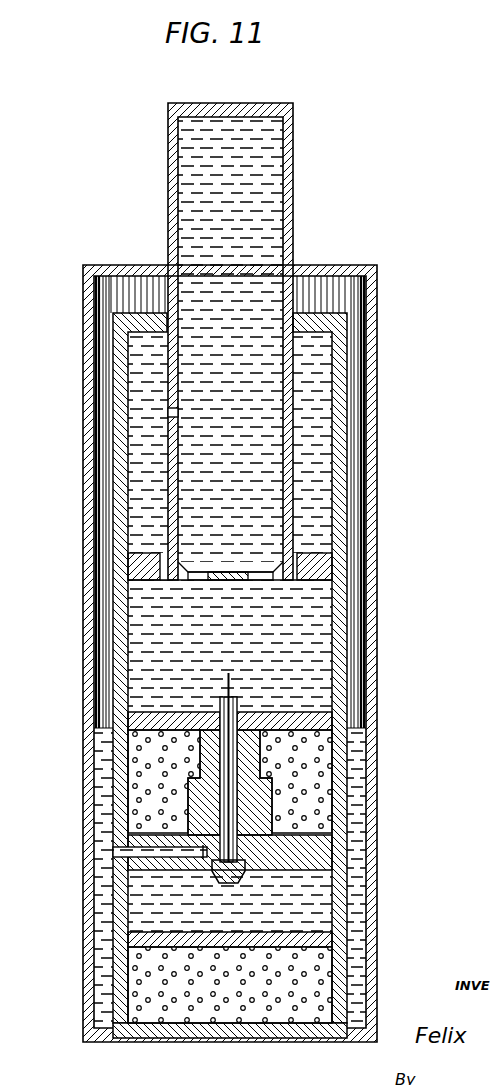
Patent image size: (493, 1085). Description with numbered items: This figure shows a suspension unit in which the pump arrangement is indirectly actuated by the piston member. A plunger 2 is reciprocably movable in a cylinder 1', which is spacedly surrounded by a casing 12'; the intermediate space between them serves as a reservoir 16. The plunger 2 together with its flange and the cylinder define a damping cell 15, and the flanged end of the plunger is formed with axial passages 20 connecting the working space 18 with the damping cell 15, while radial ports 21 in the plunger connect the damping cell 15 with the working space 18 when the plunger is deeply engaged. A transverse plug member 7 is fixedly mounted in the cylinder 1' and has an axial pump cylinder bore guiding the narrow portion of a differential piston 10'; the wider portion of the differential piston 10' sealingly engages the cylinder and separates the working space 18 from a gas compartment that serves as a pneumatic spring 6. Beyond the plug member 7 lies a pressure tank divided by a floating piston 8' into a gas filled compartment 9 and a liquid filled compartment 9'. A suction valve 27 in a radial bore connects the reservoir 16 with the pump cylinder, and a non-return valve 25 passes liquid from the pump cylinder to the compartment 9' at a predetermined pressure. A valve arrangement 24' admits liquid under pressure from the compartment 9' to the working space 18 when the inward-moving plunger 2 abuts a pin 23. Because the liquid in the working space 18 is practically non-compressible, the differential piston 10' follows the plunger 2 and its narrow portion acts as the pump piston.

The cylinder 1' is at (260, 675).
The plunger 2 is at (287, 198).
The pneumatic spring 6 is at (128, 742).
The plug member 7 is at (327, 853).
The floating piston 8' is at (270, 918).
The gas filled compartment 9 is at (230, 1010).
The liquid filled compartment 9' is at (191, 901).
The differential piston 10' is at (273, 713).
The casing 12' is at (73, 502).
The damping cell 15 is at (135, 480).
The reservoir 16 is at (360, 433).
The working space 18 is at (188, 192).
The axial passages 20 is at (300, 565).
The radial ports 21 is at (178, 415).
The pin 23 is at (232, 678).
The valve arrangement 24' is at (243, 883).
The non-return valve 25 is at (238, 757).
The suction valve 27 is at (210, 860).